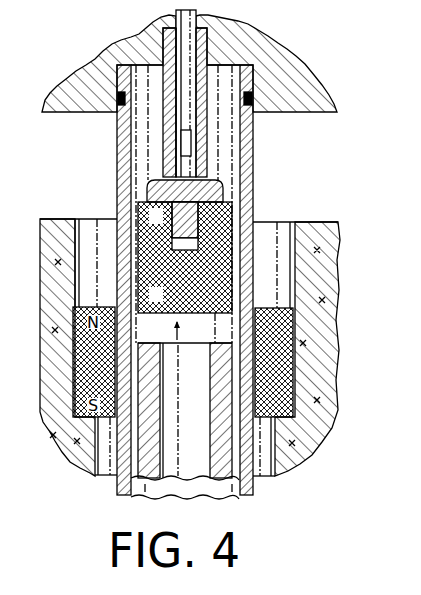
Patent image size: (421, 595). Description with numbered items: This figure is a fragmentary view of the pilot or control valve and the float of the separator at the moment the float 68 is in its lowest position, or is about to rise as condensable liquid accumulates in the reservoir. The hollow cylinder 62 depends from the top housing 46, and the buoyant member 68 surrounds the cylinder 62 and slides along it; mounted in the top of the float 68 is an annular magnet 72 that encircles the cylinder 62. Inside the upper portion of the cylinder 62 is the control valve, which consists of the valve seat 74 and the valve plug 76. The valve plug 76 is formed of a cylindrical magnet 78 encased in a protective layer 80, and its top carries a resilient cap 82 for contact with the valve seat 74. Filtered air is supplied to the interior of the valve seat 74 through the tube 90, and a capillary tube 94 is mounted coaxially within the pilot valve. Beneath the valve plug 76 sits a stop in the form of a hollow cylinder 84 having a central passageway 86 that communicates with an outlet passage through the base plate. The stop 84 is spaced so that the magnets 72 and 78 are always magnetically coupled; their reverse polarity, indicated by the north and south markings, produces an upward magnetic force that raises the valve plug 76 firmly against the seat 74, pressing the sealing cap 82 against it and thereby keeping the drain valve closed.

The top housing 46 is at (295, 113).
The tube 90 is at (213, 24).
The valve seat 74 is at (207, 176).
The capillary tube 94 is at (177, 121).
The hollow cylinder 62 is at (117, 202).
The resilient cap 82 is at (150, 179).
The protective layer 80 is at (147, 200).
The cylindrical magnet 78 is at (214, 226).
The buoyant member 68 is at (311, 222).
The annular magnet 72 is at (274, 350).
The valve plug 76 is at (168, 323).
The hollow cylinder stop 84 is at (219, 470).
The central passageway 86 is at (180, 462).